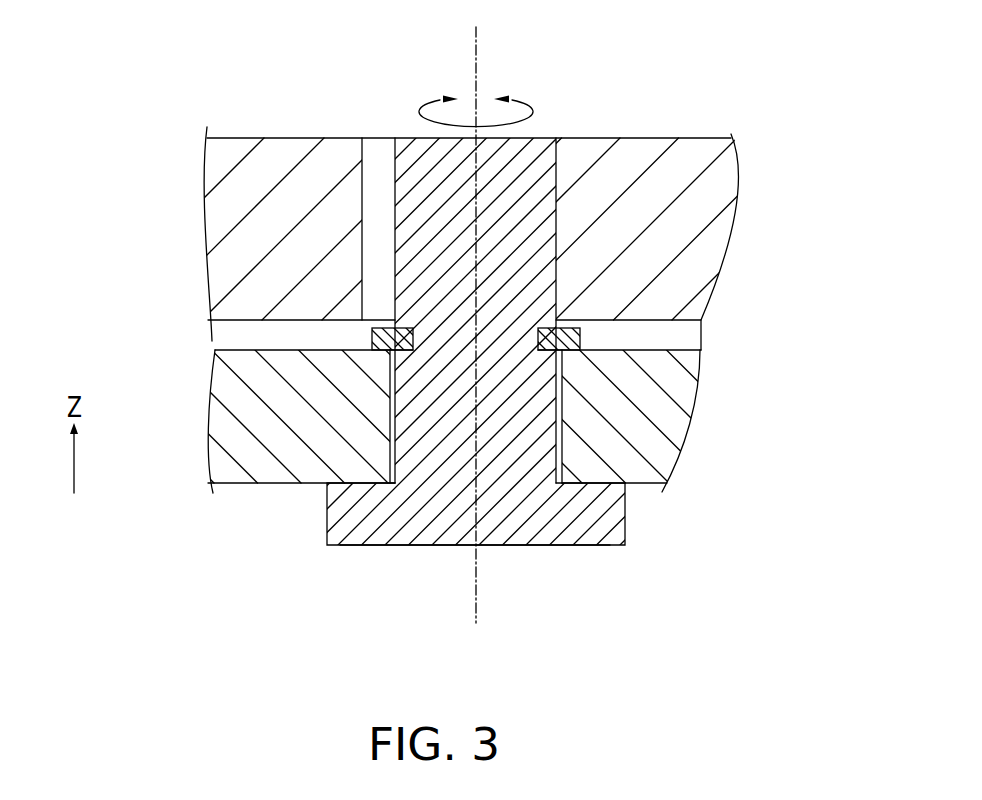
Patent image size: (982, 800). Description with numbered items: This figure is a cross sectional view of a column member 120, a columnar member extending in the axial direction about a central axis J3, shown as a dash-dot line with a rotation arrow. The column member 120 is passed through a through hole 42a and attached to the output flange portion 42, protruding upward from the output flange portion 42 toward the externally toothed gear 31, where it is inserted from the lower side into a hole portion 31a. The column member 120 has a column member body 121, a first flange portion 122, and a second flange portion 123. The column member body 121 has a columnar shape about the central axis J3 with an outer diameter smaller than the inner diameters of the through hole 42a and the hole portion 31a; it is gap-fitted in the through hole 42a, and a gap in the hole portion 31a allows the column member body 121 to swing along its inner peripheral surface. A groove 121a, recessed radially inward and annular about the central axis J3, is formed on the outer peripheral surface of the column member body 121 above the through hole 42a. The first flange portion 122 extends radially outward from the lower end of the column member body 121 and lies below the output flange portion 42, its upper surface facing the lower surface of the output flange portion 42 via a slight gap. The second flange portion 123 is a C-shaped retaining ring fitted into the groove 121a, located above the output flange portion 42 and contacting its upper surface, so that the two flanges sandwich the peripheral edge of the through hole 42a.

The central axis J3 is at (478, 62).
The externally toothed gear 31 is at (706, 157).
The hole portion 31a is at (374, 176).
The column member body 121 is at (529, 178).
The groove 121a is at (605, 320).
The first flange portion 122 is at (345, 522).
The column member 120 is at (566, 553).
The second flange portion 123 is at (372, 343).
The output flange portion 42 is at (668, 402).
The through hole 42a is at (398, 452).